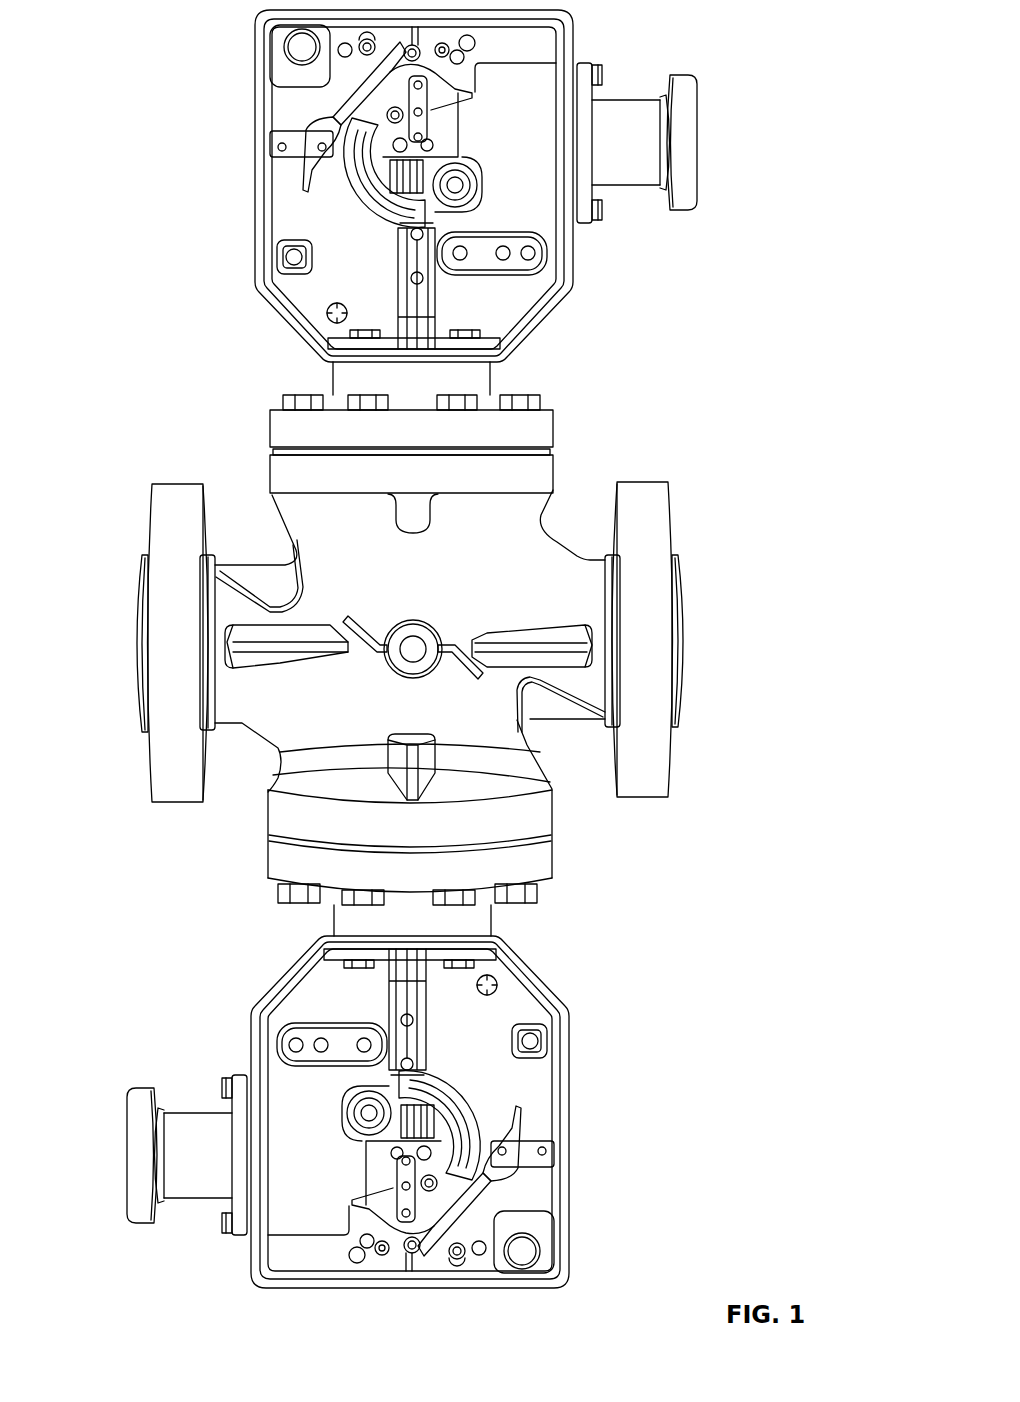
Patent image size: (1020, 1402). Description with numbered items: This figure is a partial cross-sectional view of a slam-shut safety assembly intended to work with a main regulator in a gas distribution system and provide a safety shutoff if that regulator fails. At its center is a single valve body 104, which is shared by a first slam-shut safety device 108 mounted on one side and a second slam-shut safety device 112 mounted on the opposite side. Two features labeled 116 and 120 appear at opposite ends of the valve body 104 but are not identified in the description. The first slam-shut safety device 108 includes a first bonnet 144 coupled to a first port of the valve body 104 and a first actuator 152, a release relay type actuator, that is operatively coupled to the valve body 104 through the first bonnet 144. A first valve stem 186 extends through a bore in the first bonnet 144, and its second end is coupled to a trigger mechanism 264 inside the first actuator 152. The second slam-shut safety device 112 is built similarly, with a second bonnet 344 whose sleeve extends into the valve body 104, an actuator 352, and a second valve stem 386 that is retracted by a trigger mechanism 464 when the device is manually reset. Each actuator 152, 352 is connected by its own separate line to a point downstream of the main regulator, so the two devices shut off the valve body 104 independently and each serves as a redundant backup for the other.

The valve body 104 is at (409, 713).
The first slam-shut safety device 108 is at (393, 1109).
The second slam-shut safety device 112 is at (430, 193).
The inlet flange 116 is at (150, 745).
The outlet flange 120 is at (675, 760).
The first bonnet 144 is at (270, 860).
The first actuator 152 is at (568, 1113).
The first valve stem 186 is at (387, 993).
The trigger mechanism 264 is at (470, 1043).
The second bonnet 344 is at (555, 440).
The actuator 352 is at (256, 232).
The second valve stem 386 is at (400, 313).
The trigger mechanism 464 is at (478, 140).